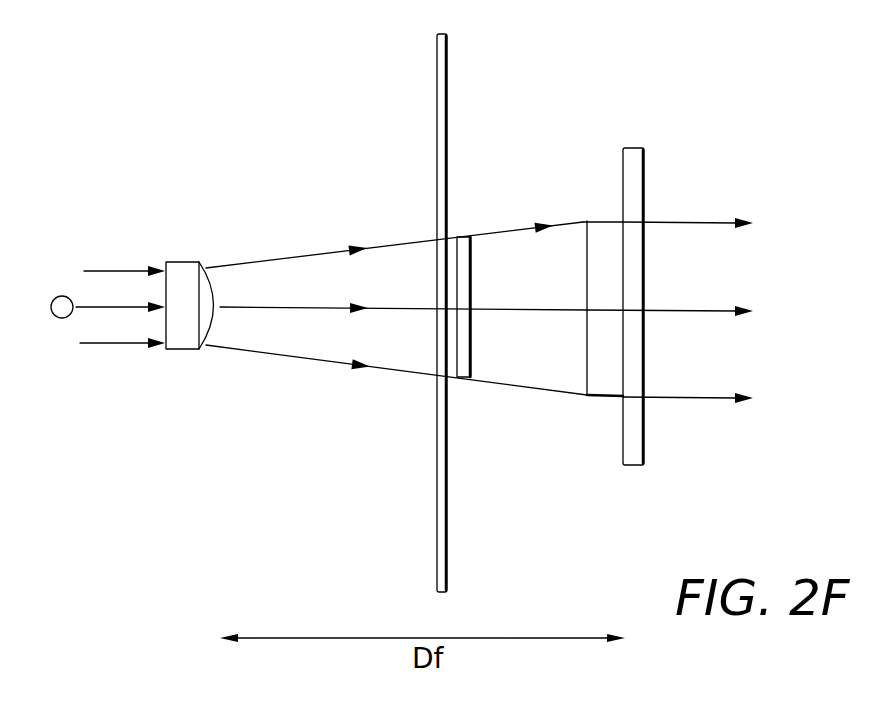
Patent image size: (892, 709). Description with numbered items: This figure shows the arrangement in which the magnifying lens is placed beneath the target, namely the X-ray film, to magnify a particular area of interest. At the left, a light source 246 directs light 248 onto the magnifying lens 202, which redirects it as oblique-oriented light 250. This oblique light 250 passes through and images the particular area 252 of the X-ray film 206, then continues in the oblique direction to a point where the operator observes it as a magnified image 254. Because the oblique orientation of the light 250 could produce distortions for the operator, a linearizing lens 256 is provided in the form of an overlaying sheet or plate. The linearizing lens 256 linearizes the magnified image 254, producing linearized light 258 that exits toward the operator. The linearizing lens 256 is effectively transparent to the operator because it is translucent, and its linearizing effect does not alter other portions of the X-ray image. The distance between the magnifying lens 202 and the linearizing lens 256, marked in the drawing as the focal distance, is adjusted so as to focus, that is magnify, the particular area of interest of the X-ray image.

The light source 246 is at (66, 318).
The light 248 is at (143, 343).
The magnifying lens 202 is at (190, 347).
The oblique-oriented light 250 is at (383, 371).
The X-ray film 206 is at (450, 505).
The particular area 252 is at (467, 367).
The magnified image 254 is at (608, 237).
The linearizing lens 256 is at (638, 445).
The linearized light 258 is at (697, 221).